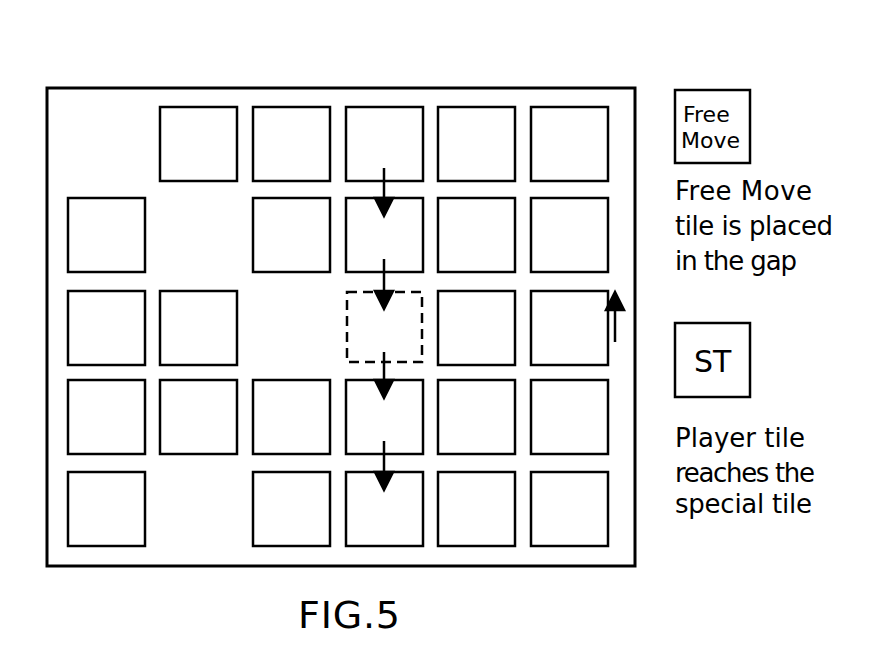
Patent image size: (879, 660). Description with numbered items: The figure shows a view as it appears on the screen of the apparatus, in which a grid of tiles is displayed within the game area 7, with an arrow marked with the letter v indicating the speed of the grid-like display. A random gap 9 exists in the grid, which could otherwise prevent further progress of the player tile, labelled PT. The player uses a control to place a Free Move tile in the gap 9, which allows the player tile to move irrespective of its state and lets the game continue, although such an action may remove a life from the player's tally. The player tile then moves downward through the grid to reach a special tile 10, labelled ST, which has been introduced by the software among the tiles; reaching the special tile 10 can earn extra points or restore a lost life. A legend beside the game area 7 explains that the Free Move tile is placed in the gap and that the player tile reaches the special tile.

The game area 7 is at (135, 88).
The gap 9 is at (412, 298).
The special tile 10 is at (362, 532).